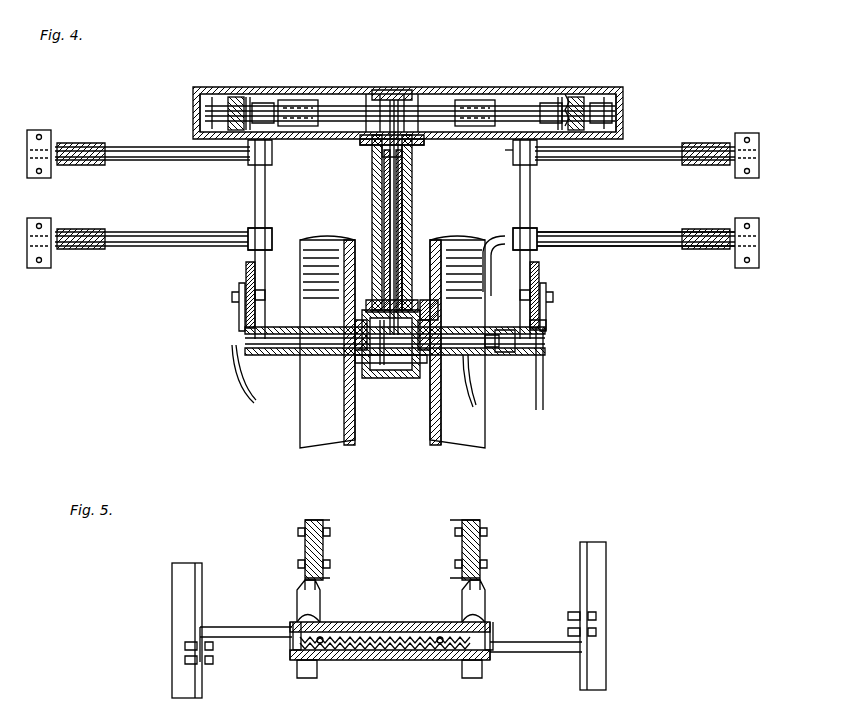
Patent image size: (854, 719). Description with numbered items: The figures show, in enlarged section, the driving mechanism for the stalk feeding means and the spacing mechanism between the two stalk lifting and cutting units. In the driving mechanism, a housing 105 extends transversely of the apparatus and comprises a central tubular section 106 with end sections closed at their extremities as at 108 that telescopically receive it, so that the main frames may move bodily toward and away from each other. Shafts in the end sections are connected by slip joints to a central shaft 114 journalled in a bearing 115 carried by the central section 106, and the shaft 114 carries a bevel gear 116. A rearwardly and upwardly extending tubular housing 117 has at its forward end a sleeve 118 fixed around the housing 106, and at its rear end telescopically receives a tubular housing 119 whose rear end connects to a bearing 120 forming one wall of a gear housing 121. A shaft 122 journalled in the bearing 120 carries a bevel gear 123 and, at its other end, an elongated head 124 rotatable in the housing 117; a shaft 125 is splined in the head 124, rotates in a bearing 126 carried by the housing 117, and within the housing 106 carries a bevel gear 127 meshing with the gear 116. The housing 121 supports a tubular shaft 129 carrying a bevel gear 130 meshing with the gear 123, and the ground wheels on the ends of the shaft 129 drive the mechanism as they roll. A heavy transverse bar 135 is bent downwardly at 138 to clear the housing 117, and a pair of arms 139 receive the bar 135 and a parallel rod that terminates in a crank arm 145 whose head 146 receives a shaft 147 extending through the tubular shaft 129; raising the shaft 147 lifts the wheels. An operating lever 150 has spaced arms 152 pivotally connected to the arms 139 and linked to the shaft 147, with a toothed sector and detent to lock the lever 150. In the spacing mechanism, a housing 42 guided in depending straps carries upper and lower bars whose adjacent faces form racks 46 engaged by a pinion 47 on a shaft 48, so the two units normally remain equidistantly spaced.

In FIG. 4, the housing 105 is at (546, 94).
In FIG. 4, the central tubular section 106 is at (442, 88).
In FIG. 4, the closed extremity 108 is at (194, 104).
In FIG. 4, the central shaft 114 is at (334, 100).
In FIG. 4, the bearing 115 is at (362, 92).
In FIG. 4, the bevel gear 116 is at (382, 94).
In FIG. 4, the tubular housing 117 is at (404, 230).
In FIG. 4, the sleeve 118 is at (406, 94).
In FIG. 4, the tubular housing 119 is at (406, 290).
In FIG. 4, the bearing 120 is at (366, 300).
In FIG. 4, the gear housing 121 is at (391, 380).
In FIG. 4, the shaft 122 is at (384, 250).
In FIG. 4, the bevel gear 123 is at (374, 378).
In FIG. 4, the elongated head 124 is at (372, 200).
In FIG. 4, the shaft 125 is at (412, 188).
In FIG. 4, the bearing 126 is at (370, 146).
In FIG. 4, the bevel gear 127 is at (418, 94).
In FIG. 4, the tubular shaft 129 is at (474, 397).
In FIG. 4, the bevel gear 130 is at (396, 368).
In FIG. 4, the bar 135 is at (656, 162).
In FIG. 4, the bent portion 138 is at (366, 183).
In FIG. 4, the arm 139 is at (520, 183).
In FIG. 4, the crank arm 145 is at (489, 244).
In FIG. 4, the head 146 is at (496, 355).
In FIG. 4, the shaft 147 is at (438, 322).
In FIG. 4, the operating lever 150 is at (544, 398).
In FIG. 4, the arm 152 is at (545, 356).
In FIG. 5, the housing 42 is at (426, 660).
In FIG. 5, the rack 46 is at (440, 636).
In FIG. 5, the pinion 47 is at (413, 636).
In FIG. 5, the shaft 48 is at (392, 638).